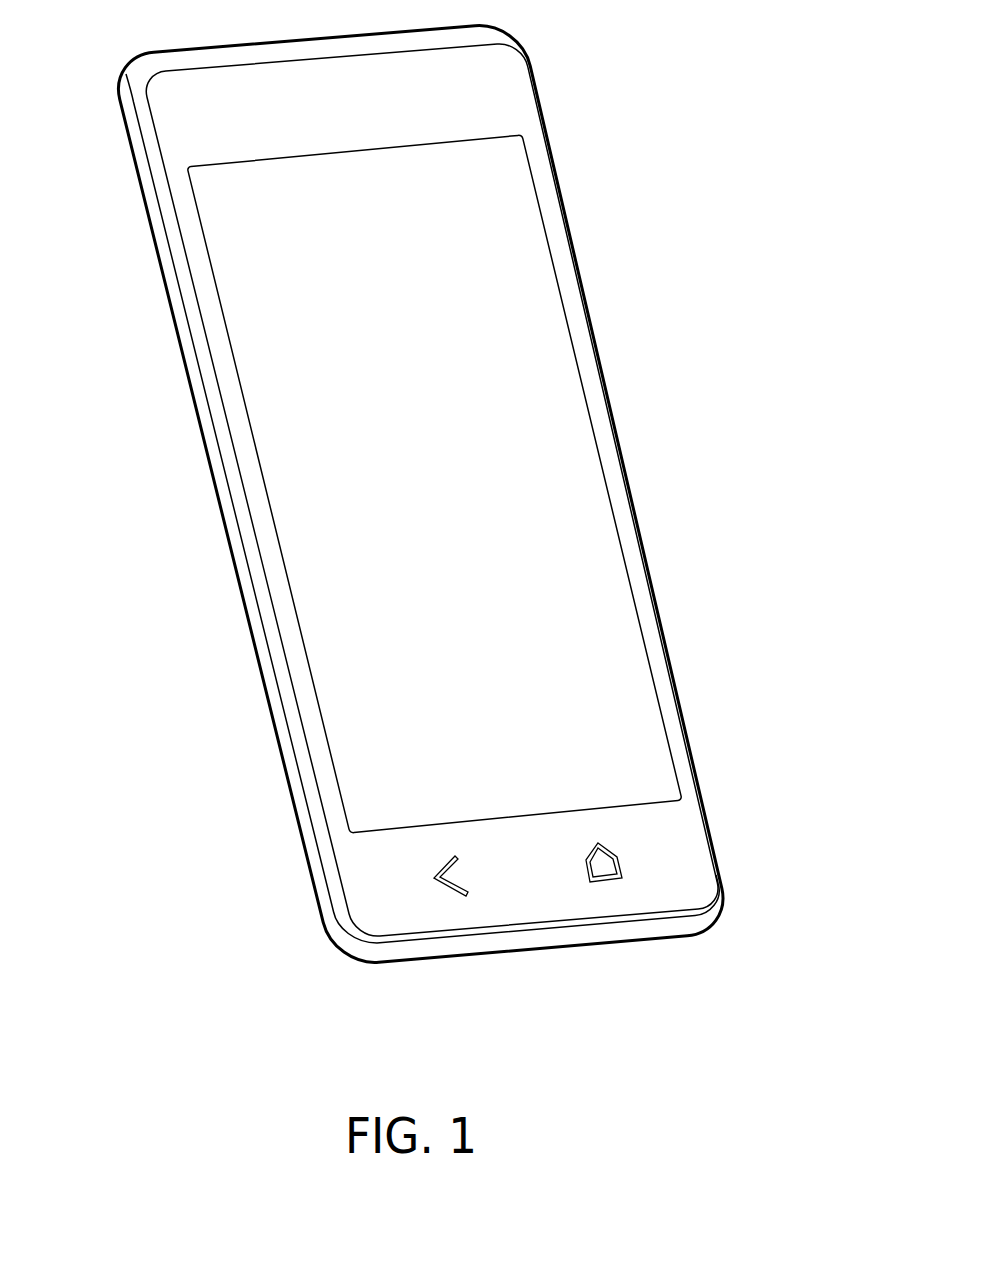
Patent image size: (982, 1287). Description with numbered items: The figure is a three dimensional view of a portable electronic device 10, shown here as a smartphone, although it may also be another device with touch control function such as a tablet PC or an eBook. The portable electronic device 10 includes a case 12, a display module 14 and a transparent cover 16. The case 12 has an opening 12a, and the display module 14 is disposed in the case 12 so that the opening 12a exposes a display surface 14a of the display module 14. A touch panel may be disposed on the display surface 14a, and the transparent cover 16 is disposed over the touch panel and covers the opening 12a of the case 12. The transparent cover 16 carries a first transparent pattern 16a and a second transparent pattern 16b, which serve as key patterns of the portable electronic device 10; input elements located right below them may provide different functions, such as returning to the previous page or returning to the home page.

The portable electronic device 10 is at (433, 529).
The case 12 is at (420, 494).
The opening 12a is at (478, 124).
The display module 14 is at (379, 483).
The display surface 14a is at (272, 308).
The transparent cover 16 is at (390, 530).
The first transparent pattern 16a is at (453, 885).
The second transparent pattern 16b is at (620, 868).